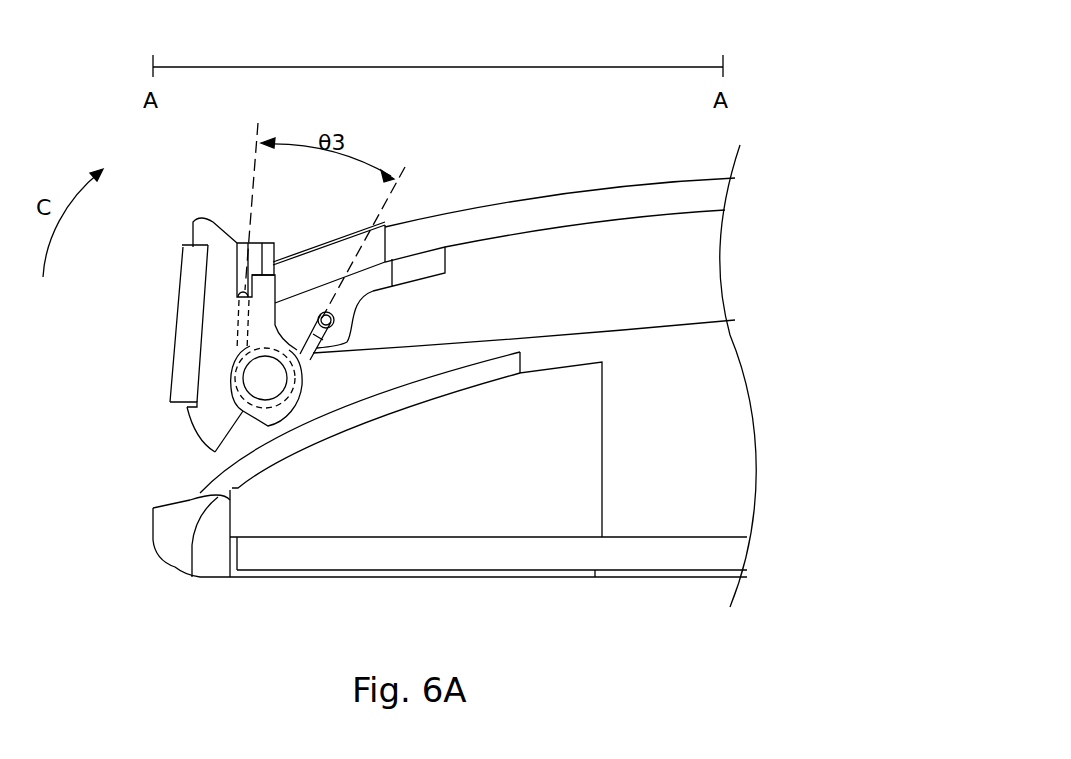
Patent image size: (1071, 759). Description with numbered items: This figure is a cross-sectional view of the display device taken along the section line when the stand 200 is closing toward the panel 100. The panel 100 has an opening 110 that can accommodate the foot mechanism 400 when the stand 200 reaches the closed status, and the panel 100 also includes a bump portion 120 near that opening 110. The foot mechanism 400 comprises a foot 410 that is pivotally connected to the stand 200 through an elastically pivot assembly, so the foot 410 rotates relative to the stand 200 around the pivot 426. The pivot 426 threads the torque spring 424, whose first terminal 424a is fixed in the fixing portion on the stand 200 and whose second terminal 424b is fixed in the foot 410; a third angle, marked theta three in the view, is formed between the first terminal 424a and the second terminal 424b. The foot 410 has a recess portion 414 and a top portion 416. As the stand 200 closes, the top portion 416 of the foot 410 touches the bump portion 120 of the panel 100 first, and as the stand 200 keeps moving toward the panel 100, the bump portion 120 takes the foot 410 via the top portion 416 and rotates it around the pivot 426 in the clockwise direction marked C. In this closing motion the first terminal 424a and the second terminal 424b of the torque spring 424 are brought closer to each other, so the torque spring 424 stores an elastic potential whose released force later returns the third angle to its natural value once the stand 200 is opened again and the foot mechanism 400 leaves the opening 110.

The panel 100 is at (622, 560).
The opening 110 is at (541, 506).
The bump portion 120 is at (218, 510).
The stand 200 is at (640, 197).
The foot mechanism 400 is at (153, 320).
The foot 410 is at (200, 231).
The recess portion 414 is at (230, 423).
The top portion 416 is at (215, 450).
The torque spring 424 is at (280, 397).
The first terminal 424a is at (322, 356).
The second terminal 424b is at (245, 333).
The pivot 426 is at (265, 382).